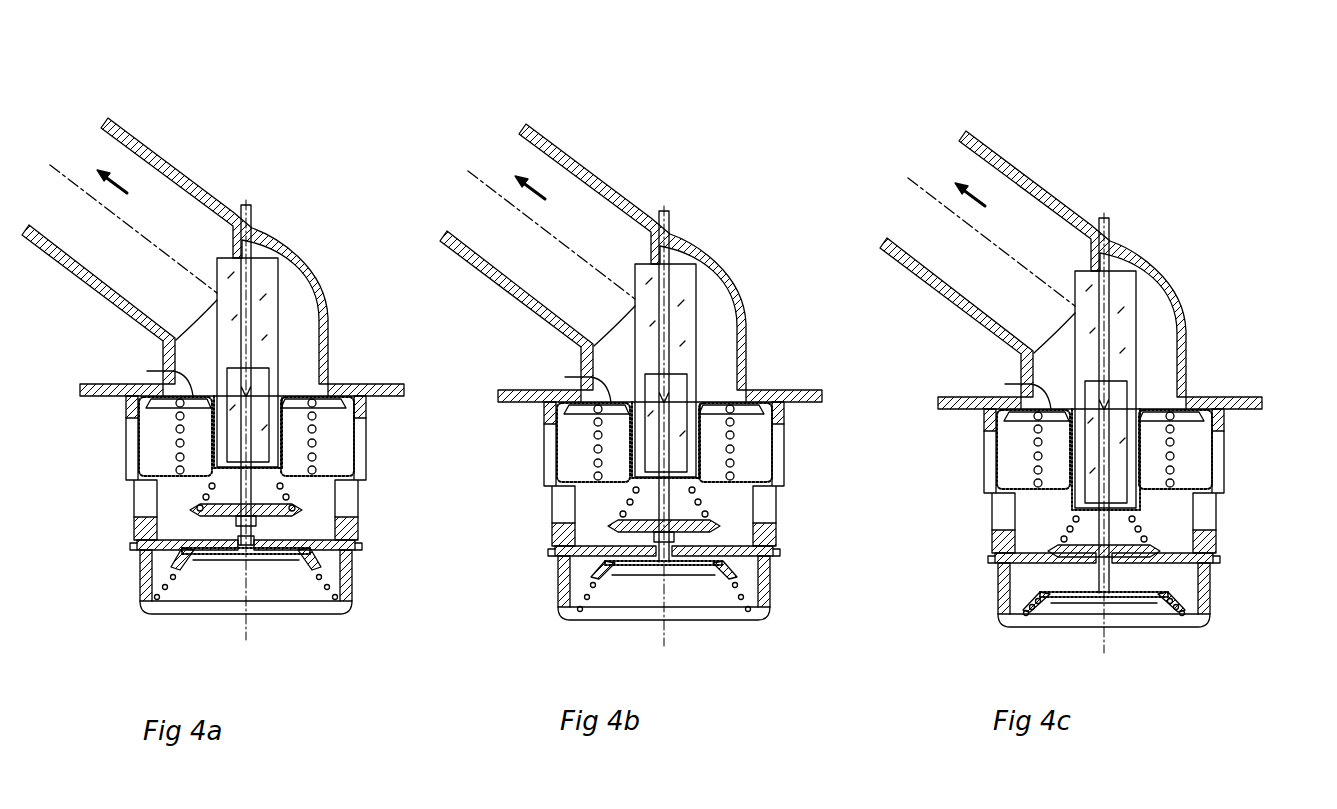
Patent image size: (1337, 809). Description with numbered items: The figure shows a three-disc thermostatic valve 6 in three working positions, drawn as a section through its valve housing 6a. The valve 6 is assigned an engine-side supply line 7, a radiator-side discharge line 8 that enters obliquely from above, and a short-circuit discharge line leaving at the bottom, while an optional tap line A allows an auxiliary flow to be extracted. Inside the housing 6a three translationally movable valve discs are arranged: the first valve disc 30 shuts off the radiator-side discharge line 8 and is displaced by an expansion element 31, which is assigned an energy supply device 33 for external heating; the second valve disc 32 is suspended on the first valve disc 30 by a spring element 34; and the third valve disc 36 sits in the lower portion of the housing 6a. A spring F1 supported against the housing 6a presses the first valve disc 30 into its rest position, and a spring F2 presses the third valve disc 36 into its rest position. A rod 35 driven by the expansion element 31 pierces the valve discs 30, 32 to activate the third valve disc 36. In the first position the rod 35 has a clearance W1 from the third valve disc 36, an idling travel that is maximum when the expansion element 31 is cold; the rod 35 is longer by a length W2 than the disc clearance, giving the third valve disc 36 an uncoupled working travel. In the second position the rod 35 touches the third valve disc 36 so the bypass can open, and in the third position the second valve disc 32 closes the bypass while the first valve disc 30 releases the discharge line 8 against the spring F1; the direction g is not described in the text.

In FIG. 4A, the radiator-side discharge line 8 is at (120, 178).
In FIG. 4B, the radiator-side discharge line 8 is at (593, 227).
In FIG. 4C, the radiator-side discharge line 8 is at (1033, 233).
In FIG. 4A, the thermostatic valve 6 is at (305, 205).
In FIG. 4B, the thermostatic valve 6 is at (747, 161).
In FIG. 4C, the thermostatic valve 6 is at (1209, 163).
In FIG. 4A, the valve housing 6a is at (372, 393).
In FIG. 4A, the engine-side supply line 7 is at (394, 470).
In FIG. 4B, the engine-side supply line 7 is at (846, 435).
In FIG. 4C, the engine-side supply line 7 is at (1275, 461).
In FIG. 4A, the first valve disc 30 is at (150, 372).
In FIG. 4A, the expansion element 31 is at (265, 378).
In FIG. 4A, the second valve disc 32 is at (236, 518).
In FIG. 4A, the energy supply device 33 is at (256, 205).
In FIG. 4A, the spring element 34 is at (206, 484).
In FIG. 4A, the rod 35 is at (248, 538).
In FIG. 4A, the third valve disc 36 is at (195, 555).
In FIG. 4A, the tap line A is at (100, 437).
In FIG. 4A, the spring F1 is at (312, 442).
In FIG. 4A, the spring F2 is at (320, 580).
In FIG. 4A, the clearance W1 is at (160, 546).
In FIG. 4B, the length W2 is at (860, 483).
In FIG. 4A, the gravity direction g is at (203, 623).
In FIG. 4B, the gravity direction g is at (598, 653).
In FIG. 4C, the gravity direction g is at (1035, 660).